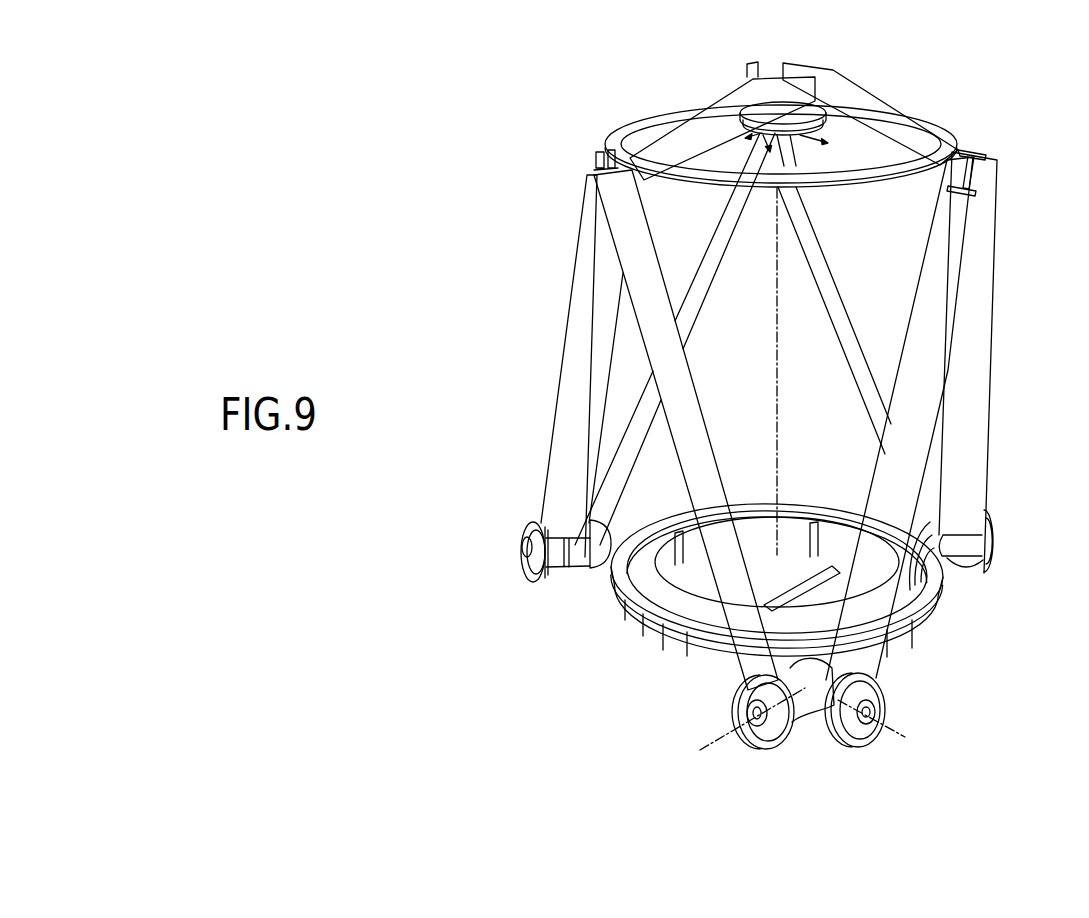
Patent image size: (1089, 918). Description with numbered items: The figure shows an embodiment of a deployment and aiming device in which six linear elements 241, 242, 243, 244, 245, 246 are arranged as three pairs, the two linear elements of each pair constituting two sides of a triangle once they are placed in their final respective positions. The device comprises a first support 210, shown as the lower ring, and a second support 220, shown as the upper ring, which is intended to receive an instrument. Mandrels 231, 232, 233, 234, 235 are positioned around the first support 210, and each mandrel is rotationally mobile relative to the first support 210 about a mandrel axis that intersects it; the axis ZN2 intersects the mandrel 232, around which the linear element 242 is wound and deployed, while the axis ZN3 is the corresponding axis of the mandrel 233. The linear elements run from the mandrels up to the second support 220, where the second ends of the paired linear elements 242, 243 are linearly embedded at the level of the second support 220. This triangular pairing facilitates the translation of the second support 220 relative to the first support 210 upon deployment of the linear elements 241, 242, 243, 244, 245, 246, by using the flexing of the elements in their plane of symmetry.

The first support 210 is at (611, 580).
The second support 220 is at (643, 117).
The mandrel 231 is at (521, 556).
The mandrel 232 is at (780, 752).
The mandrel 233 is at (883, 697).
The mandrel 234 is at (998, 556).
The mandrel 235 is at (940, 482).
The linear element 241 is at (561, 407).
The linear element 242 is at (708, 566).
The linear element 243 is at (905, 578).
The linear element 244 is at (992, 353).
The linear element 245 is at (842, 298).
The linear element 246 is at (634, 402).
The mandrel axis ZN2 is at (725, 733).
The mandrel axis ZN3 is at (898, 729).